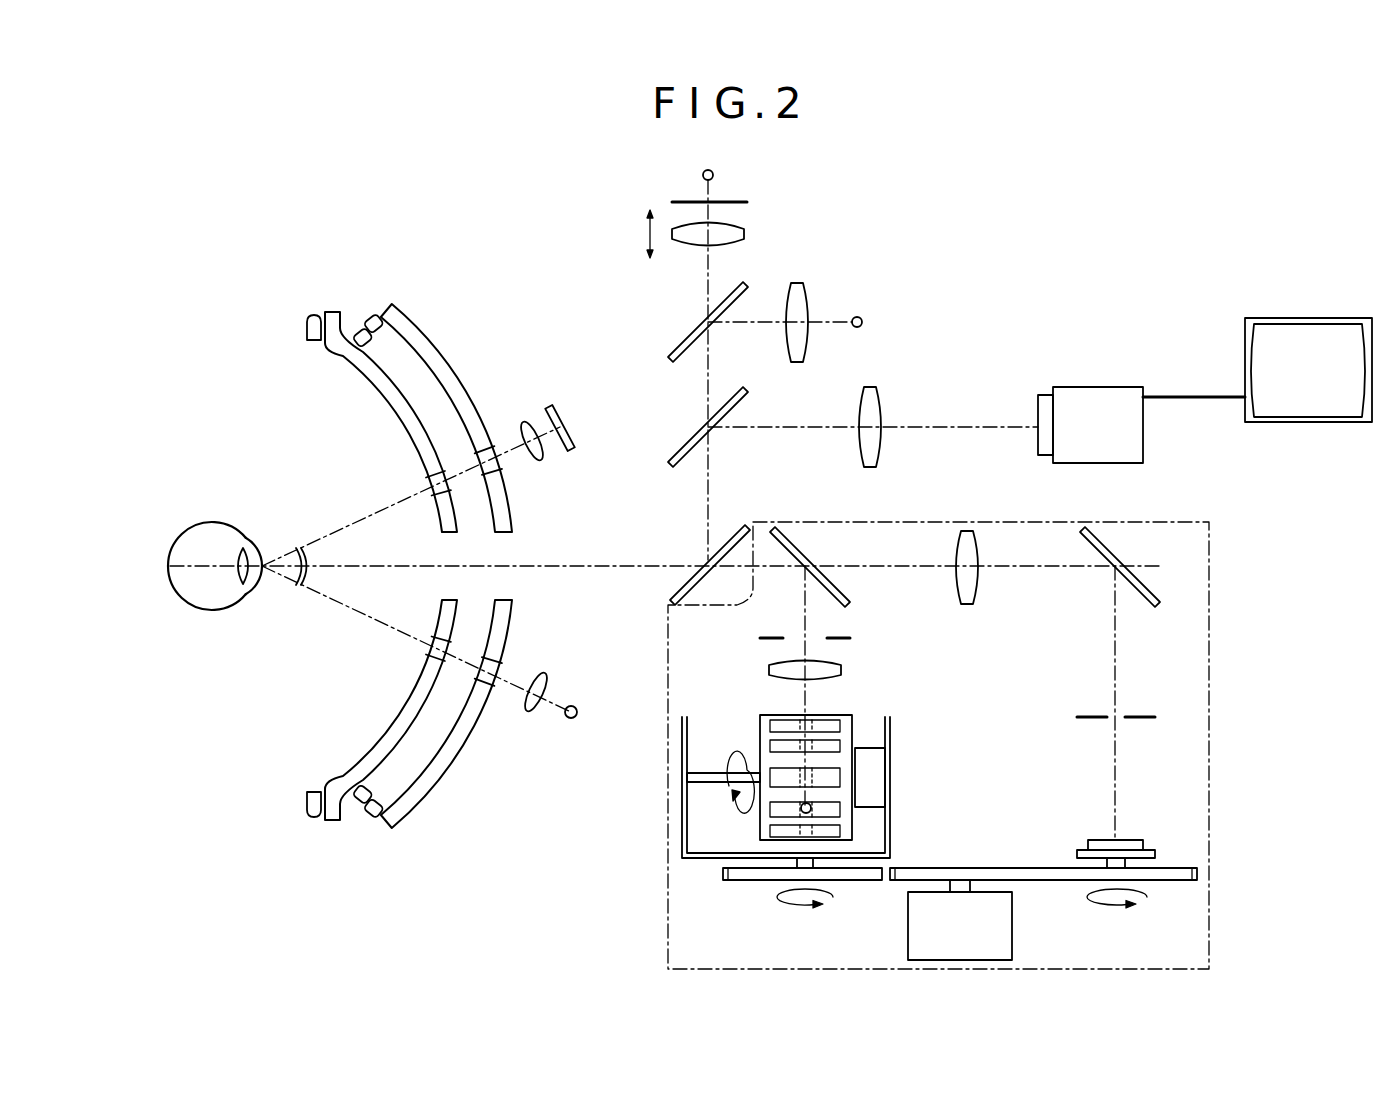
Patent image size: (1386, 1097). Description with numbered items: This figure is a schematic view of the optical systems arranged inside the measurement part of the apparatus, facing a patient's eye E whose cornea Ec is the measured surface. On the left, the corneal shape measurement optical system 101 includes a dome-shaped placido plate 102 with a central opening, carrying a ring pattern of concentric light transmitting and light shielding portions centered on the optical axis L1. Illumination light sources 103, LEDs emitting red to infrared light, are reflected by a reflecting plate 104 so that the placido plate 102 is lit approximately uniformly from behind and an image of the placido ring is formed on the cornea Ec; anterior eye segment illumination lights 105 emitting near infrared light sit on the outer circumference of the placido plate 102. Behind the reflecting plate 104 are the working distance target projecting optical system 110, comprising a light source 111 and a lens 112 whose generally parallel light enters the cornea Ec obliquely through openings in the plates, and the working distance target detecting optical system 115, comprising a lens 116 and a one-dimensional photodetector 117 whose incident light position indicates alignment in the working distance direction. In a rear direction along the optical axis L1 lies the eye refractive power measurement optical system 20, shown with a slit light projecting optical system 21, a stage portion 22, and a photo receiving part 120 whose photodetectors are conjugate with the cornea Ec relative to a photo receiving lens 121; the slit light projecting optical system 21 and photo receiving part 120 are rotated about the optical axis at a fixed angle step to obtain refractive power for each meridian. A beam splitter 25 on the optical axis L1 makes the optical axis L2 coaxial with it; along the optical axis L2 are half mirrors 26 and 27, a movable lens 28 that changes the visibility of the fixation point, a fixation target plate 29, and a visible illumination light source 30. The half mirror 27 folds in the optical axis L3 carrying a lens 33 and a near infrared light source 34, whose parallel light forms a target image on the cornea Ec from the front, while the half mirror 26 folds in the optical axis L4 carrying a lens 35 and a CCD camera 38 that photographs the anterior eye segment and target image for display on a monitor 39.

The eye refractive power measurement optical system 20 is at (1215, 562).
The slit light projecting optical system 21 is at (868, 692).
The stage unit 22 is at (1096, 768).
The beam splitter 25 is at (735, 525).
The half mirror 26 is at (685, 450).
The half mirror 27 is at (685, 345).
The lens 28 is at (723, 233).
The fixation target plate 29 is at (730, 202).
The illumination light source 30 is at (703, 176).
The lens 33 is at (800, 305).
The light source 34 is at (862, 327).
The lens 35 is at (873, 440).
The CCD camera 38 is at (1098, 385).
The monitor 39 is at (1265, 352).
The corneal shape measurement optical system 101 is at (325, 680).
The placido plate 102 is at (395, 415).
The illumination light sources 103 is at (372, 318).
The reflecting plate 104 is at (435, 790).
The anterior eye segment illumination lights 105 is at (312, 318).
The working distance target projecting optical system 110 is at (534, 790).
The light source 111 is at (572, 719).
The lens 112 is at (530, 705).
The working distance target detecting optical system 115 is at (532, 332).
The lens 116 is at (520, 420).
The one-dimensional photodetector 117 is at (553, 406).
The photo receiving part 120 is at (1135, 840).
The photo receiving lens 121 is at (972, 580).
The patient's eye E is at (205, 538).
The cornea Ec is at (260, 598).
The optical axis L1 is at (625, 568).
The optical axis L2 is at (705, 503).
The optical axis L3 is at (758, 325).
The optical axis L4 is at (973, 428).